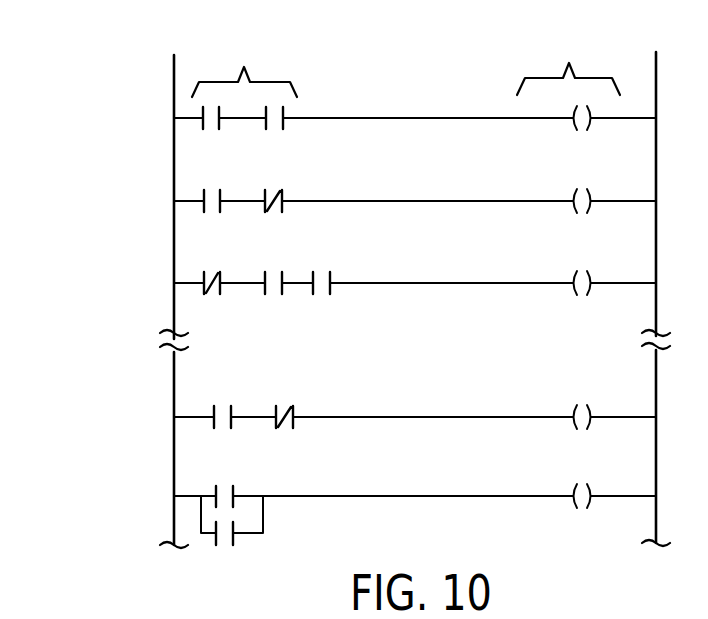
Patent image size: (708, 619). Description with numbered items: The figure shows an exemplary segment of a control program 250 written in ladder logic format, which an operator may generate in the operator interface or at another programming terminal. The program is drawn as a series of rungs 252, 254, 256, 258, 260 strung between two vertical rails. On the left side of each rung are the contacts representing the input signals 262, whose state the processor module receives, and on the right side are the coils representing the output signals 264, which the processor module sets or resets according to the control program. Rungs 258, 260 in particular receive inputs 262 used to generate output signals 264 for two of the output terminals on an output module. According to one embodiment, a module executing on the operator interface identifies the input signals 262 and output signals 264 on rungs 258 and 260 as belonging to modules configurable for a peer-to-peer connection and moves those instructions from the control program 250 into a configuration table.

The control program 250 is at (122, 50).
The rung 252 is at (162, 118).
The rung 254 is at (162, 202).
The rung 256 is at (162, 284).
The rung 258 is at (162, 418).
The rung 260 is at (162, 497).
The input signals 262 is at (244, 64).
The output signals 264 is at (568, 62).